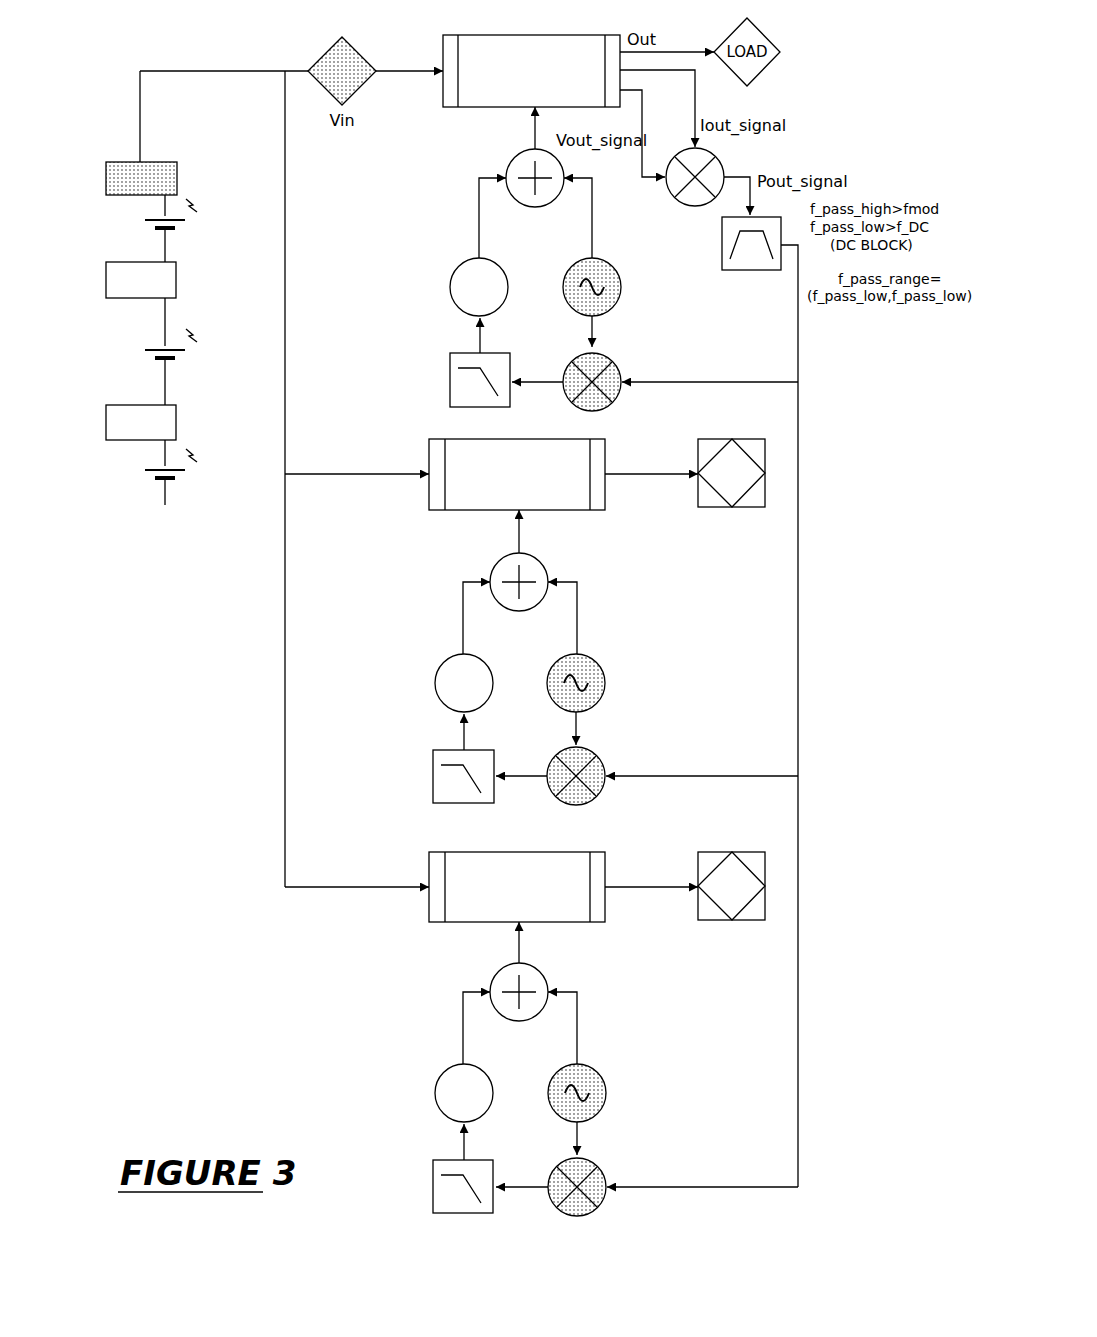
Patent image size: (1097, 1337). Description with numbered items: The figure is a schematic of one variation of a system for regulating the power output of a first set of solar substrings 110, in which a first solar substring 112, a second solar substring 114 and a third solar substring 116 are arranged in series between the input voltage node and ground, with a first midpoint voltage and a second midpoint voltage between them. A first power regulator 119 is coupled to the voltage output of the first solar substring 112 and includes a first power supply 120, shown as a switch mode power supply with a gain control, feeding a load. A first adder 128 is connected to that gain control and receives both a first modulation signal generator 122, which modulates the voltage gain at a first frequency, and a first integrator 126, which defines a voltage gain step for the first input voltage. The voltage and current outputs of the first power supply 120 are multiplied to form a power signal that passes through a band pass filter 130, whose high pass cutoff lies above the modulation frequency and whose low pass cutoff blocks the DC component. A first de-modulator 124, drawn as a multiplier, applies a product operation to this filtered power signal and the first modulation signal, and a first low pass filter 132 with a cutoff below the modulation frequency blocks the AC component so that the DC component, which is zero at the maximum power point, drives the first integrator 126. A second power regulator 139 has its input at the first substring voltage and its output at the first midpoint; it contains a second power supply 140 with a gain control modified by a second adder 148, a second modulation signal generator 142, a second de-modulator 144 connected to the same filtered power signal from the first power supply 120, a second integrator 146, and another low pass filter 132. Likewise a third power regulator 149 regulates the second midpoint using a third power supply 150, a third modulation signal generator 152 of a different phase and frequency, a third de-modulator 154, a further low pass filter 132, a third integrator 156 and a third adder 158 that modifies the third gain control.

The first set of solar substrings 110 is at (125, 230).
The first solar substring 112 is at (186, 229).
The second solar substring 114 is at (186, 358).
The third solar substring 116 is at (186, 478).
The first power regulator 119 is at (458, 185).
The first power supply 120 is at (443, 40).
The first modulation signal generator 122 is at (608, 312).
The first de-modulator 124 is at (615, 400).
The first integrator 126 is at (450, 287).
The first adder 128 is at (513, 160).
The band pass filter 130 is at (770, 272).
The first low pass filter 132 is at (450, 395).
The second power regulator 139 is at (425, 567).
The second power supply 140 is at (608, 500).
The second modulation signal generator 142 is at (592, 708).
The second de-modulator 144 is at (600, 798).
The second integrator 146 is at (435, 683).
The second adder 148 is at (540, 558).
The third power regulator 149 is at (445, 962).
The third power supply 150 is at (608, 910).
The third modulation signal generator 152 is at (595, 1118).
The third de-modulator 154 is at (600, 1208).
The third integrator 156 is at (445, 1073).
The third adder 158 is at (540, 968).